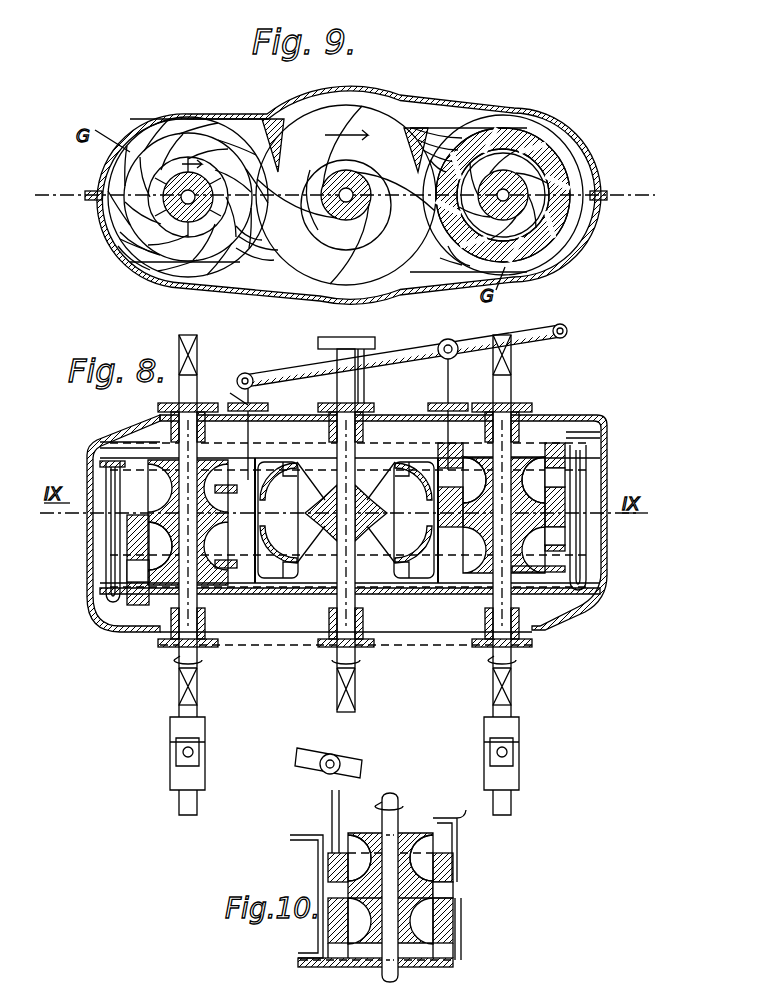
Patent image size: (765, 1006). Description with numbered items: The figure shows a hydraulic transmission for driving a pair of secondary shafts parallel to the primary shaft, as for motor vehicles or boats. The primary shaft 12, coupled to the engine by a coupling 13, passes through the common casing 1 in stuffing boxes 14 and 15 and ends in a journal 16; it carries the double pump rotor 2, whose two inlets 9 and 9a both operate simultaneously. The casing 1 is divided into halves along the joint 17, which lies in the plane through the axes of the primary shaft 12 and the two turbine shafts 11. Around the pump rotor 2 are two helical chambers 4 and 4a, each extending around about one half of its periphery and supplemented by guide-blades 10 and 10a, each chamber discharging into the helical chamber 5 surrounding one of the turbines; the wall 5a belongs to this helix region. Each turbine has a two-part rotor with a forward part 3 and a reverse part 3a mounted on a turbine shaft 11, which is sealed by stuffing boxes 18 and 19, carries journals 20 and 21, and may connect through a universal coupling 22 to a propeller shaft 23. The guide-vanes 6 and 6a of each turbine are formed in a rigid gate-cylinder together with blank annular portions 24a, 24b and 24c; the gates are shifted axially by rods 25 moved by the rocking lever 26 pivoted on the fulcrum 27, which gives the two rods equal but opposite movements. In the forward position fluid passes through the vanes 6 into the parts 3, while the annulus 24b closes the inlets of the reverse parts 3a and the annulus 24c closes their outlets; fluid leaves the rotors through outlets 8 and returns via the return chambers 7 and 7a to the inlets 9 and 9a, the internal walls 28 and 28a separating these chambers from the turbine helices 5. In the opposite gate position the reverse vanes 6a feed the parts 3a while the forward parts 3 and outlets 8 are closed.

In FIG. 9, the common casing 1 is at (392, 92).
In FIG. 8, the common casing 1 is at (347, 523).
In FIG. 9, the pump rotor 2 is at (346, 195).
In FIG. 8, the pump rotor 2 is at (349, 512).
In FIG. 9, the forward rotor part 3 is at (222, 180).
In FIG. 8, the forward rotor part 3 is at (346, 521).
In FIG. 10, the forward rotor part 3 is at (390, 888).
In FIG. 9, the reverse rotor part 3a is at (525, 232).
In FIG. 8, the reverse rotor part 3a is at (346, 513).
In FIG. 10, the reverse rotor part 3a is at (390, 858).
In FIG. 9, the pump helical chamber 4 is at (440, 138).
In FIG. 9, the pump helical chamber 4a is at (272, 260).
In FIG. 9, the turbine helical chamber 5 is at (345, 201).
In FIG. 8, the turbine helical chamber 5 is at (128, 559).
In FIG. 8, the stator ring part 5a is at (138, 571).
In FIG. 9, the forward turbine guide-vanes 6 is at (140, 238).
In FIG. 8, the forward turbine guide-vanes 6 is at (566, 536).
In FIG. 10, the forward turbine guide-vanes 6 is at (454, 958).
In FIG. 9, the reverse turbine guide-vanes 6a is at (565, 247).
In FIG. 8, the reverse turbine guide-vanes 6a is at (566, 475).
In FIG. 10, the reverse turbine guide-vanes 6a is at (454, 894).
In FIG. 8, the return chamber 7 is at (413, 567).
In FIG. 8, the return chamber 7a is at (414, 508).
In FIG. 8, the turbine rotor outlets 8 is at (215, 484).
In FIG. 10, the turbine rotor outlets 8 is at (365, 968).
In FIG. 8, the pump inlet 9 is at (300, 588).
In FIG. 8, the pump inlet 9a is at (281, 508).
In FIG. 9, the guide-blades 10 is at (440, 152).
In FIG. 9, the guide-blades 10a is at (252, 252).
In FIG. 9, the turbine shaft 11 is at (118, 236).
In FIG. 8, the turbine shaft 11 is at (179, 388).
In FIG. 10, the turbine shaft 11 is at (398, 800).
In FIG. 9, the primary shaft 12 is at (330, 242).
In FIG. 8, the primary shaft 12 is at (355, 392).
In FIG. 8, the coupling 13 is at (340, 337).
In FIG. 8, the stuffing box 14 is at (370, 420).
In FIG. 8, the stuffing box 15 is at (380, 645).
In FIG. 8, the journal 16 is at (355, 692).
In FIG. 9, the casing joint 17 is at (82, 197).
In FIG. 8, the stuffing box 18 is at (515, 425).
In FIG. 8, the stuffing box 19 is at (171, 430).
In FIG. 8, the journal 20 is at (197, 360).
In FIG. 8, the journal 21 is at (197, 686).
In FIG. 8, the universal coupling 22 is at (205, 756).
In FIG. 8, the propeller shaft 23 is at (197, 802).
In FIG. 8, the blank annular portion 24a is at (566, 548).
In FIG. 10, the blank annular portion 24a is at (440, 969).
In FIG. 8, the blank annular portion 24b is at (566, 500).
In FIG. 10, the blank annular portion 24b is at (454, 916).
In FIG. 8, the blank annular portion 24c is at (566, 452).
In FIG. 10, the blank annular portion 24c is at (454, 870).
In FIG. 8, the rod 25 is at (446, 392).
In FIG. 10, the rod 25 is at (330, 802).
In FIG. 8, the rocking lever 26 is at (452, 358).
In FIG. 10, the rocking lever 26 is at (362, 768).
In FIG. 8, the fulcrum 27 is at (330, 384).
In FIG. 8, the internal wall 28 is at (586, 570).
In FIG. 10, the internal wall 28 is at (461, 940).
In FIG. 9, the internal wall 28a is at (470, 264).
In FIG. 8, the internal wall 28a is at (600, 450).
In FIG. 10, the internal wall 28a is at (458, 840).